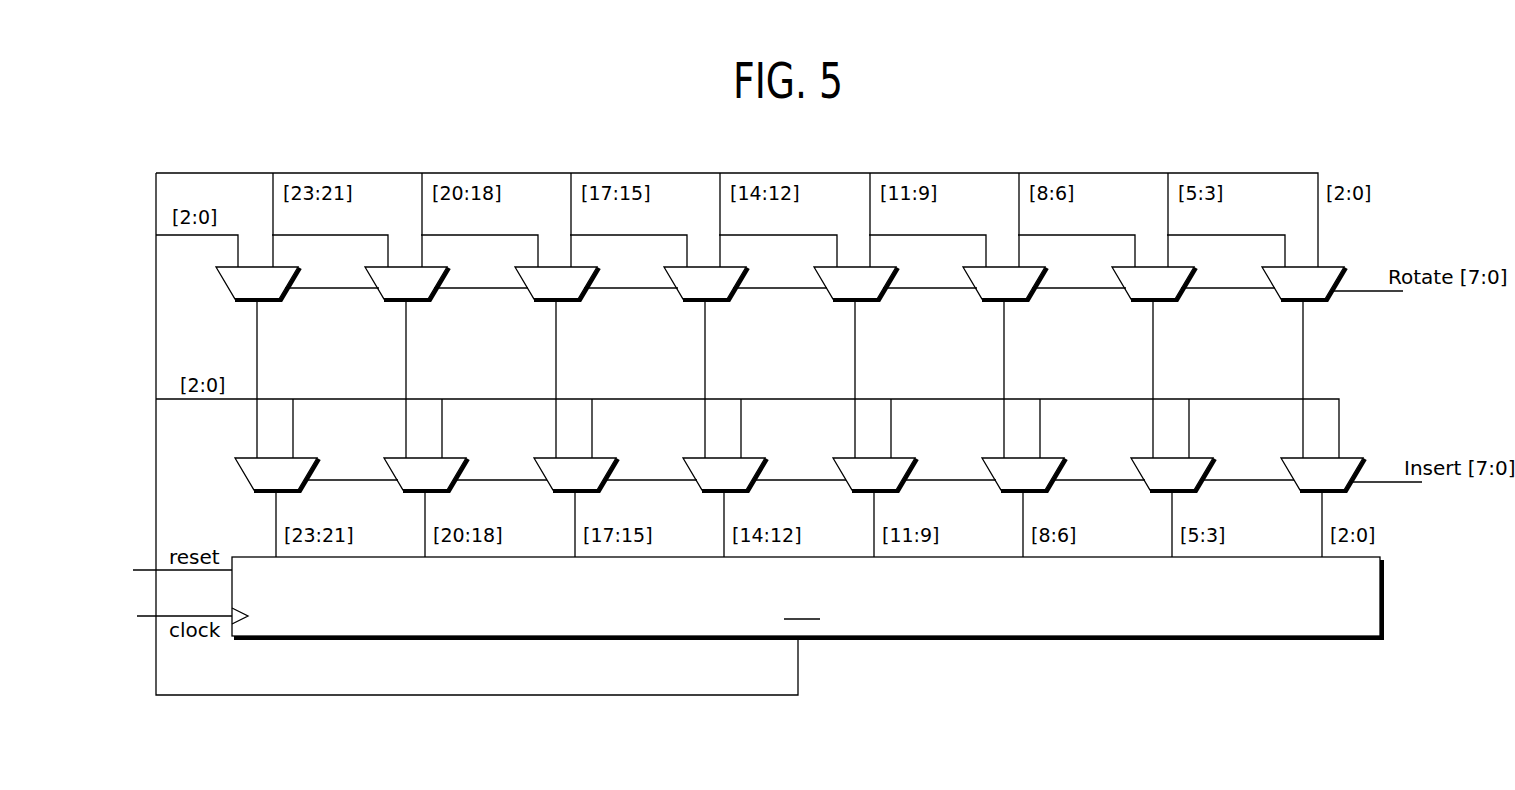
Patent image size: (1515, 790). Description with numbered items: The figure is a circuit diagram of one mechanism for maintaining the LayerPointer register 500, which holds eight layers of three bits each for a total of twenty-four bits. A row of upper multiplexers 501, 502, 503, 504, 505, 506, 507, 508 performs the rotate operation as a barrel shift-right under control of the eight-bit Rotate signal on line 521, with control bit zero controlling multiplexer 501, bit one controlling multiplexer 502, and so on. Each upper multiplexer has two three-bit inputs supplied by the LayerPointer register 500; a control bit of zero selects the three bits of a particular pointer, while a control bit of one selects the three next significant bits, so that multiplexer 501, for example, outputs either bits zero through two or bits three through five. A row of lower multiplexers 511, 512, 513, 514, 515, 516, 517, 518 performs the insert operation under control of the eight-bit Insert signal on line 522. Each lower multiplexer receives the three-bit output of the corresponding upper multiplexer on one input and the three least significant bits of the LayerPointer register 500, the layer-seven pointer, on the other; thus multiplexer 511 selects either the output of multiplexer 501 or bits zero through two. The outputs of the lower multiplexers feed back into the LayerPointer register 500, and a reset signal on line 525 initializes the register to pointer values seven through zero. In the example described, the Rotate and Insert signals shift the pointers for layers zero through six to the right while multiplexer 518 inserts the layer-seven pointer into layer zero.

The LayerPointer register 500 is at (807, 597).
The multiplexer 501 is at (1300, 295).
The multiplexer 502 is at (1168, 295).
The multiplexer 503 is at (1019, 295).
The multiplexer 504 is at (870, 295).
The multiplexer 505 is at (720, 295).
The multiplexer 506 is at (571, 295).
The multiplexer 507 is at (421, 295).
The multiplexer 508 is at (272, 295).
The multiplexer 511 is at (1313, 505).
The multiplexer 512 is at (1187, 505).
The multiplexer 513 is at (1038, 505).
The multiplexer 514 is at (889, 505).
The multiplexer 515 is at (739, 505).
The multiplexer 516 is at (590, 505).
The multiplexer 517 is at (440, 505).
The multiplexer 518 is at (291, 505).
The line carrying Rotate signal 521 is at (1377, 294).
The line carrying Insert signal 522 is at (1395, 483).
The line carrying reset signal 525 is at (225, 572).